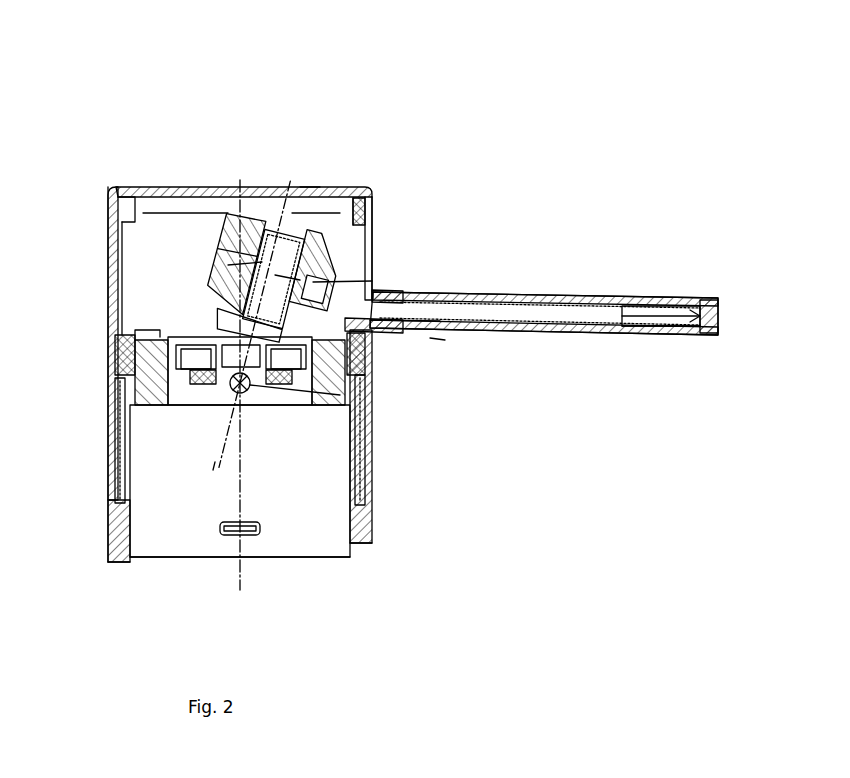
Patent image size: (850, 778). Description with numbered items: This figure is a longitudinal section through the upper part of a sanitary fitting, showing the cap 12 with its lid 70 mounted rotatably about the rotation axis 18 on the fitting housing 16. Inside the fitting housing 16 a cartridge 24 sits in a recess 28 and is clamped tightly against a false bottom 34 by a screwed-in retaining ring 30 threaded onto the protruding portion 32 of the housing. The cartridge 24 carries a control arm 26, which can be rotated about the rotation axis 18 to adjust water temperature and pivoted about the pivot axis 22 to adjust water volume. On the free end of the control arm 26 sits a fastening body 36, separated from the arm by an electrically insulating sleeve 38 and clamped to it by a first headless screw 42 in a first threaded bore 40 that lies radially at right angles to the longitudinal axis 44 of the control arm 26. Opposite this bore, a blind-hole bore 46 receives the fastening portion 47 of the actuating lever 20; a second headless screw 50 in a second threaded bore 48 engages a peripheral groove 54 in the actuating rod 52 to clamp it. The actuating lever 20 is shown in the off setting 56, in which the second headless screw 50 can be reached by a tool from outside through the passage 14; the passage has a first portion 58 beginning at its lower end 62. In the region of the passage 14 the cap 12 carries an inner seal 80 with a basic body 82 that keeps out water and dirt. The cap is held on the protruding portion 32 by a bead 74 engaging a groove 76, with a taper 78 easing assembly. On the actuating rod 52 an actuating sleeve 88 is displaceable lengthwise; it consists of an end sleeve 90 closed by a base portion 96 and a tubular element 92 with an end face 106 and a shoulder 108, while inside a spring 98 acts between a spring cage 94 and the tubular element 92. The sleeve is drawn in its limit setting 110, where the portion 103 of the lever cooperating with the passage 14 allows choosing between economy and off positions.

The cap 12 is at (128, 207).
The passage 14 is at (372, 248).
The fitting housing 16 is at (372, 527).
The rotation axis 18 is at (240, 192).
The actuating lever 20 is at (560, 292).
The pivot axis 22 is at (372, 413).
The cartridge 24 is at (305, 460).
The control arm 26 is at (282, 200).
The recess 28 is at (370, 537).
The retaining ring 30 is at (372, 383).
The protruding portion 32 is at (122, 400).
The false bottom 34 is at (225, 563).
The fastening body 36 is at (230, 232).
The electrically insulating sleeve 38 is at (318, 205).
The first threaded bore 40 is at (225, 262).
The first headless screw 42 is at (262, 268).
The longitudinal axis 44 is at (133, 480).
The blind-hole bore 46 is at (372, 340).
The fastening portion 47 is at (366, 360).
The second threaded bore 48 is at (300, 267).
The second headless screw 50 is at (380, 293).
The actuating rod 52 is at (527, 337).
The groove 54 is at (250, 302).
The off setting 56 is at (482, 165).
The first portion 58 is at (0, 462).
The lower end 62 is at (0, 525).
The lid 70 is at (350, 192).
The bead 74 is at (372, 480).
The groove 76 is at (205, 465).
The taper 78 is at (372, 390).
The seal 80 is at (370, 222).
The basic body 82 is at (372, 197).
The actuating sleeve 88 is at (655, 350).
The end sleeve 90 is at (650, 302).
The tubular element 92 is at (427, 332).
The spring cage 94 is at (718, 336).
The base portion 96 is at (720, 320).
The spring 98 is at (604, 340).
The portion 103 is at (552, 290).
The end face 106 is at (410, 335).
The shoulder 108 is at (300, 280).
The limit setting 110 is at (493, 392).